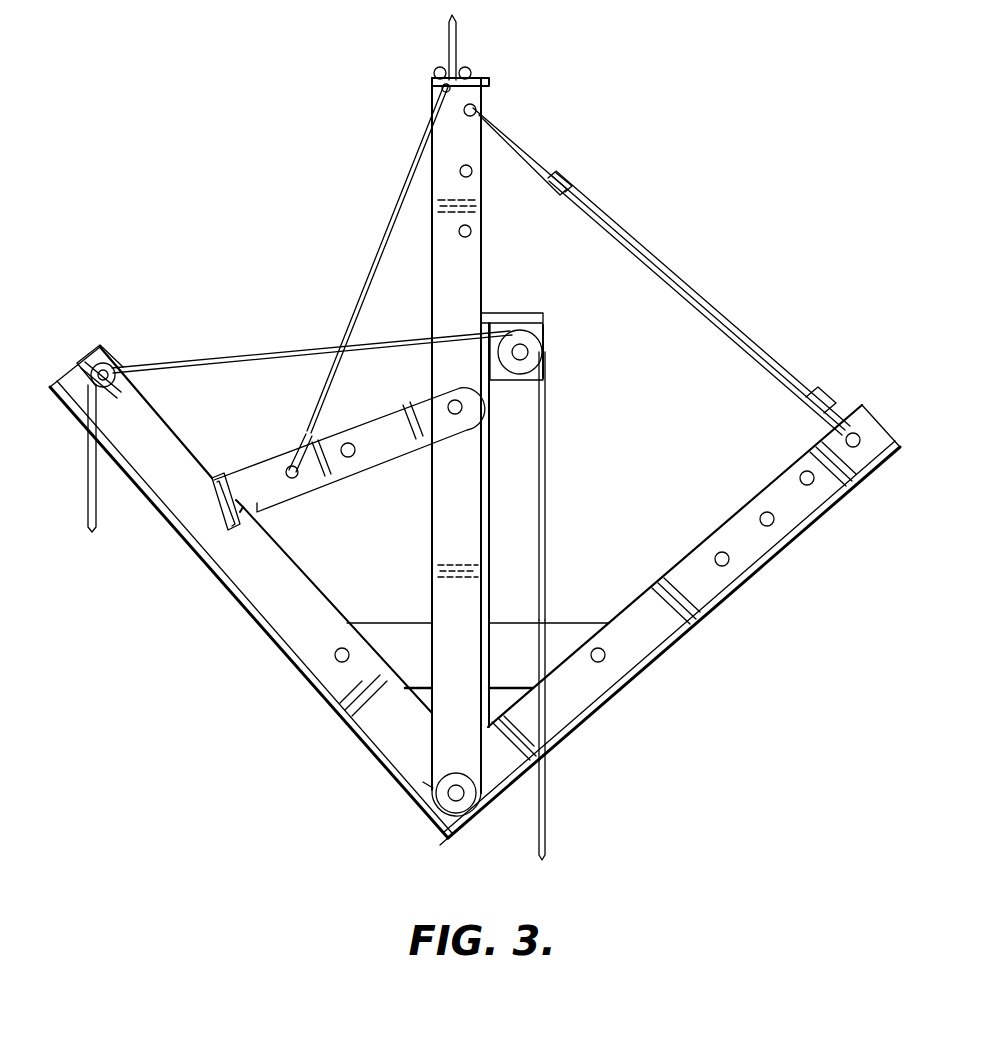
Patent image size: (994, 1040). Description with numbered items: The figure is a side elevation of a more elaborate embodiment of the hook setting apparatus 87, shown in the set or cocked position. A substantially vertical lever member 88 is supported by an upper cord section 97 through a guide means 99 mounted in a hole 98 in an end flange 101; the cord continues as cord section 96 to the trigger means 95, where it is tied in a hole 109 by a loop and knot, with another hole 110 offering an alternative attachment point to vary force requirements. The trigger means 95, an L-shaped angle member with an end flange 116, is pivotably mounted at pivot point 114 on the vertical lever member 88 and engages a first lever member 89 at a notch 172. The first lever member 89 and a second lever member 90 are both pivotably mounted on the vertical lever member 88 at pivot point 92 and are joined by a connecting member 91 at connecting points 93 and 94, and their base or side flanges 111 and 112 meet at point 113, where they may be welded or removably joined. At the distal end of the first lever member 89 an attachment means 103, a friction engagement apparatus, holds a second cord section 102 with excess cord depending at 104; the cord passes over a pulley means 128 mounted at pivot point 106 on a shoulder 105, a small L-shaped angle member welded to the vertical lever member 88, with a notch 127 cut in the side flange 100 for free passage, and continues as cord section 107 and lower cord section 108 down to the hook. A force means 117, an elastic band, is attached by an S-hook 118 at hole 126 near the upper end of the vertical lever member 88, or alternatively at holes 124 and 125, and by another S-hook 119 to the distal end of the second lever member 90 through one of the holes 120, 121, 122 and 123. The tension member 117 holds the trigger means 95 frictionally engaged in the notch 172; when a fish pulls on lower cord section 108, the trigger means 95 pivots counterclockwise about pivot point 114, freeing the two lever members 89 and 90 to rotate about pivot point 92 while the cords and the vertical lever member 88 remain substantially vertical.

The hook setting apparatus 87 is at (198, 824).
The vertical lever member 88 is at (466, 295).
The first lever member 89 is at (273, 600).
The second lever member 90 is at (705, 615).
The connecting member 91 is at (562, 622).
The pivot point 92 is at (458, 800).
The connecting point 93 is at (345, 648).
The connecting point 94 is at (603, 648).
The trigger means 95 is at (248, 474).
The cord section 96 is at (375, 271).
The upper cord section 97 is at (457, 26).
The hole 98 is at (444, 91).
The guide means 99 is at (470, 69).
The side flange 100 is at (490, 256).
The end flange 101 is at (435, 75).
The second cord section 102 is at (190, 362).
The attachment means 103 is at (106, 360).
The excess cord 104 is at (95, 516).
The shoulder 105 is at (530, 313).
The pivot point 106 is at (527, 351).
The cord section 107 is at (547, 480).
The lower cord section 108 is at (548, 840).
The hole 109 is at (290, 466).
The hole 110 is at (349, 443).
The base or side flange 111 is at (290, 667).
The base or side flange 112 is at (645, 668).
The point 113 is at (440, 843).
The pivot point 114 is at (448, 402).
The end flange 116 is at (226, 478).
The force means 117 is at (660, 262).
The S-hook 118 is at (515, 136).
The S-hook 119 is at (822, 402).
The hole 120 is at (715, 560).
The hole 121 is at (760, 521).
The hole 122 is at (800, 478).
The hole 123 is at (844, 442).
The hole 124 is at (470, 229).
The hole 125 is at (471, 174).
The hole 126 is at (478, 106).
The notch 127 is at (505, 383).
The pulley means 128 is at (547, 372).
The notch 172 is at (228, 531).